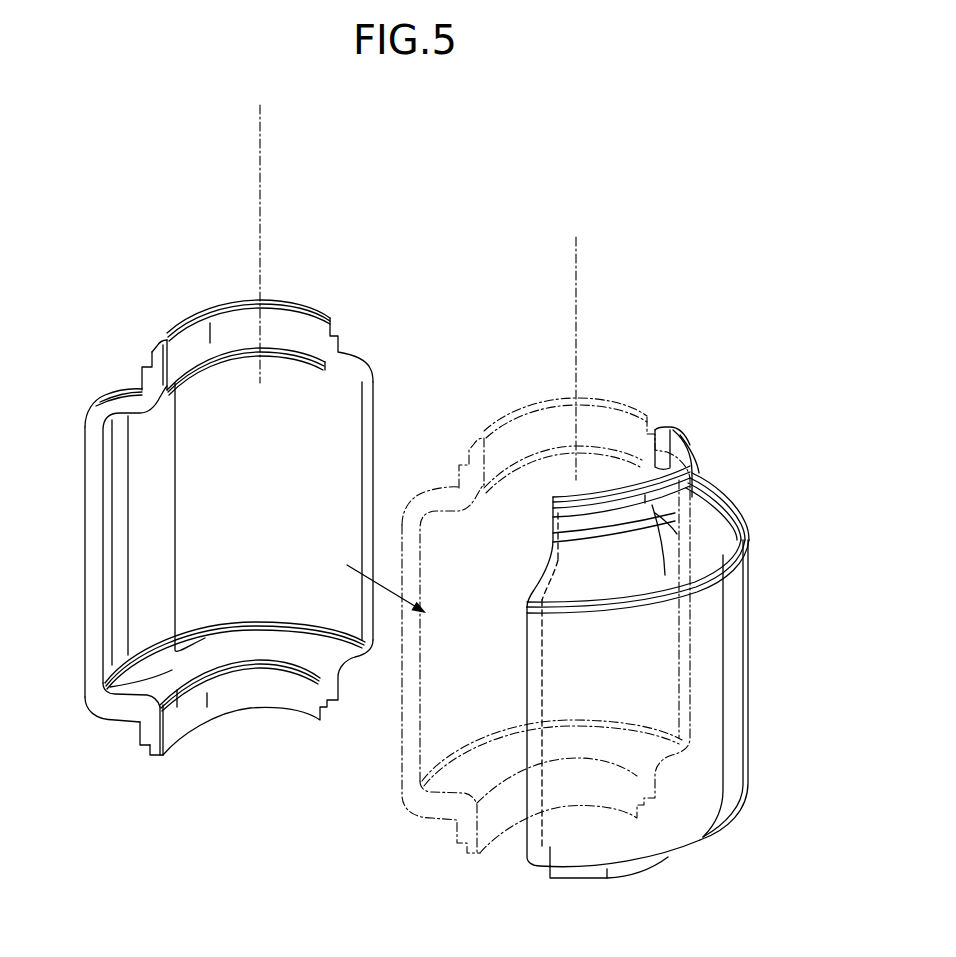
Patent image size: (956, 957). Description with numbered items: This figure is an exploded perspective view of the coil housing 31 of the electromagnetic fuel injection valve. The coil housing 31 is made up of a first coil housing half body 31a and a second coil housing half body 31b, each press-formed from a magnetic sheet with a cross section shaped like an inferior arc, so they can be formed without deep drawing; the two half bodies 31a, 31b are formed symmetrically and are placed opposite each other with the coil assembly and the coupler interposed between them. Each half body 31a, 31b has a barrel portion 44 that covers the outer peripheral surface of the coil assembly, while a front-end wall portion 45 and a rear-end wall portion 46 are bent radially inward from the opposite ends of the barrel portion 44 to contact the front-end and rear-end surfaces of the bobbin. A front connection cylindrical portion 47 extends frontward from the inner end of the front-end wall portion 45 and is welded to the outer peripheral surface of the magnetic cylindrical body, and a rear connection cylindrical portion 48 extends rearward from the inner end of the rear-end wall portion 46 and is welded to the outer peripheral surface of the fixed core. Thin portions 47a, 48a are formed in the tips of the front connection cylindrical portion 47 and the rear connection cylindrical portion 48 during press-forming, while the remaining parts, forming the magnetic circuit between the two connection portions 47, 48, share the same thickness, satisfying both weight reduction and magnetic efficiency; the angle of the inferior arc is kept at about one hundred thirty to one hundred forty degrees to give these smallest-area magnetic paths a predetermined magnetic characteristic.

The coil housing 31 is at (535, 268).
The first coil housing half body 31a is at (504, 402).
The second coil housing half body 31b is at (700, 452).
The barrel portion 44 is at (88, 566).
The front-end wall portion 45 is at (120, 709).
The rear-end wall portion 46 is at (126, 394).
The front connection cylindrical portion 47 is at (155, 730).
The thin portion 47a is at (157, 758).
The rear connection cylindrical portion 48 is at (152, 382).
The thin portion 48a is at (158, 346).